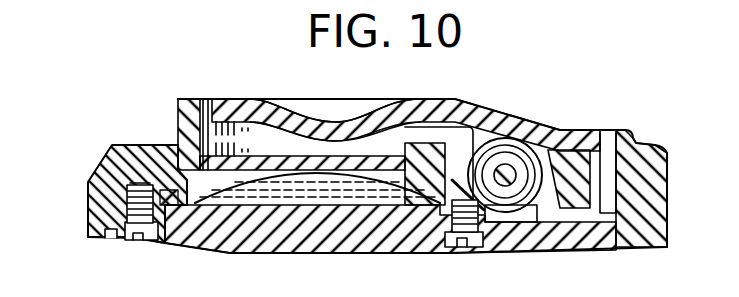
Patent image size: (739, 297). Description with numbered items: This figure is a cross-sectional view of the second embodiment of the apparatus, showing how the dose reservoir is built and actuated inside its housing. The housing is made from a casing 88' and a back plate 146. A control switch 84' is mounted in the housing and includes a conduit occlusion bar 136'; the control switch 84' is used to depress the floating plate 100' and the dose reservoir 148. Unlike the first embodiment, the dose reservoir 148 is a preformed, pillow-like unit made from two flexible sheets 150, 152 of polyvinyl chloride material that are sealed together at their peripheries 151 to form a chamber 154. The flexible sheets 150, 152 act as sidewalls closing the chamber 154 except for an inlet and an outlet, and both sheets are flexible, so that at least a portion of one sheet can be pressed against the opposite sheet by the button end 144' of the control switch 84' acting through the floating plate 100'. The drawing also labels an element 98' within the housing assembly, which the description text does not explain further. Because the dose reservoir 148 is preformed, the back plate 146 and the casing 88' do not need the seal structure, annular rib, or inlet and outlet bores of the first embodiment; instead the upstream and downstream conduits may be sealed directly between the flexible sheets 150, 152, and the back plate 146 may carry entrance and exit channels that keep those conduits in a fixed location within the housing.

The control switch 84' is at (422, 159).
The casing 88' is at (109, 184).
The base plate 98' is at (390, 248).
The floating plate 100' is at (317, 232).
The conduit occlusion bar 136' is at (669, 188).
The button end 144' is at (330, 106).
The back plate 146 is at (611, 248).
The dose reservoir 148 is at (168, 240).
The flexible sheet 150 is at (400, 180).
The peripheries 151 is at (168, 145).
The flexible sheet 152 is at (450, 226).
The chamber 154 is at (297, 190).